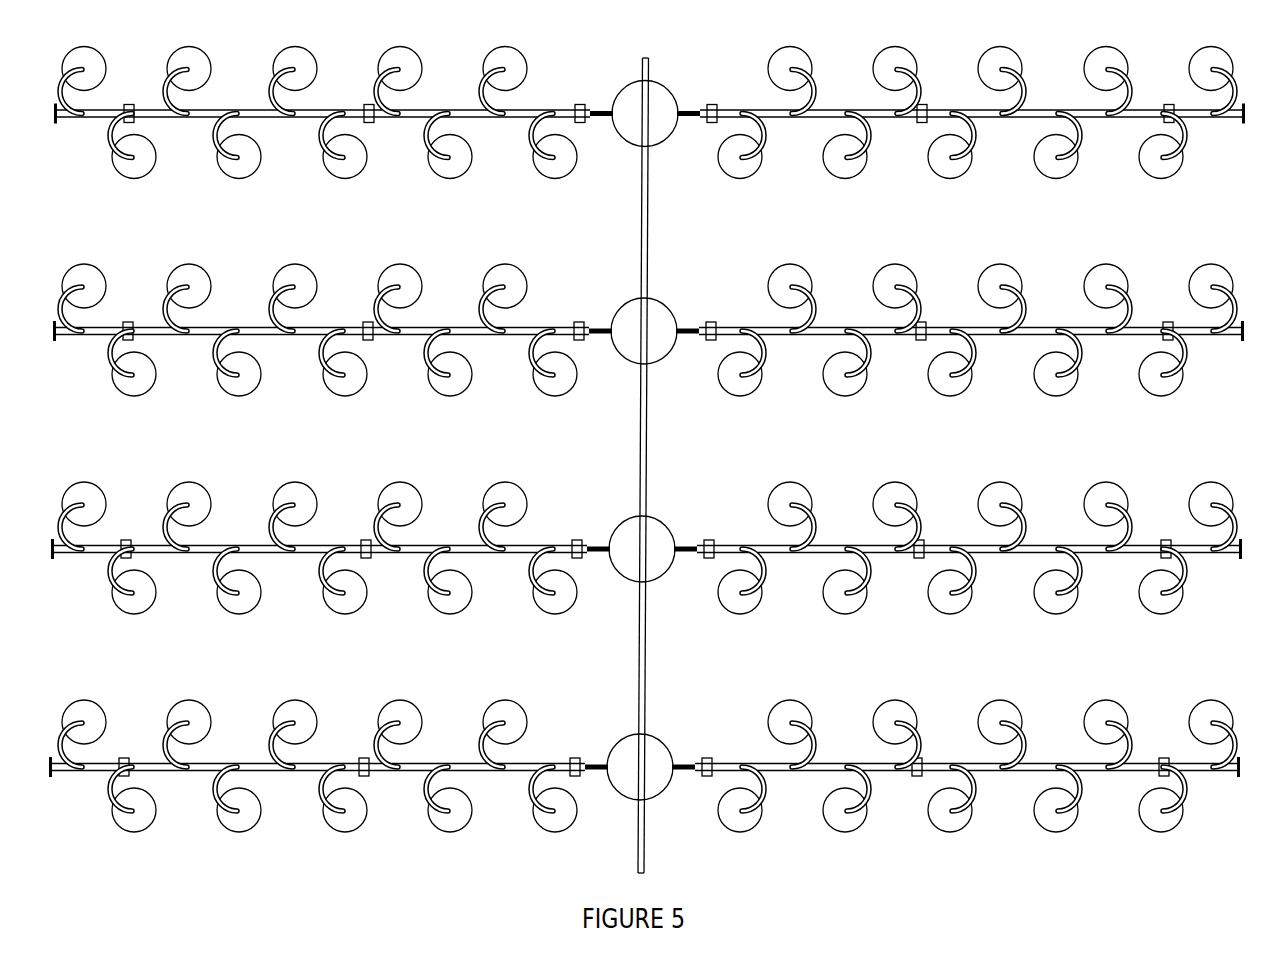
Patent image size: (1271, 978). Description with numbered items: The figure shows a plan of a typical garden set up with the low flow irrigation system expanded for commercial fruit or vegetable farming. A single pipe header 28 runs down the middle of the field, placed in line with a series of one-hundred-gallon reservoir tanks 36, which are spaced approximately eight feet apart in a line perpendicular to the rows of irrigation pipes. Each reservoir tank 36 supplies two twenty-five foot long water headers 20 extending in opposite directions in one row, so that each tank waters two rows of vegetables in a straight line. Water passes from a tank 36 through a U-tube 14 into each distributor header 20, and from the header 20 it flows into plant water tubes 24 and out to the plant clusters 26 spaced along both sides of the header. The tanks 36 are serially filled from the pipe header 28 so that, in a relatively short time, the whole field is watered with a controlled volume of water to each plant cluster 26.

The U-tube 14 is at (605, 328).
The distributor header 20 is at (315, 118).
The plant water tube 24 is at (280, 433).
The plant cluster 26 is at (462, 177).
The pipe header 28 is at (648, 442).
The reservoir tank 36 is at (662, 133).